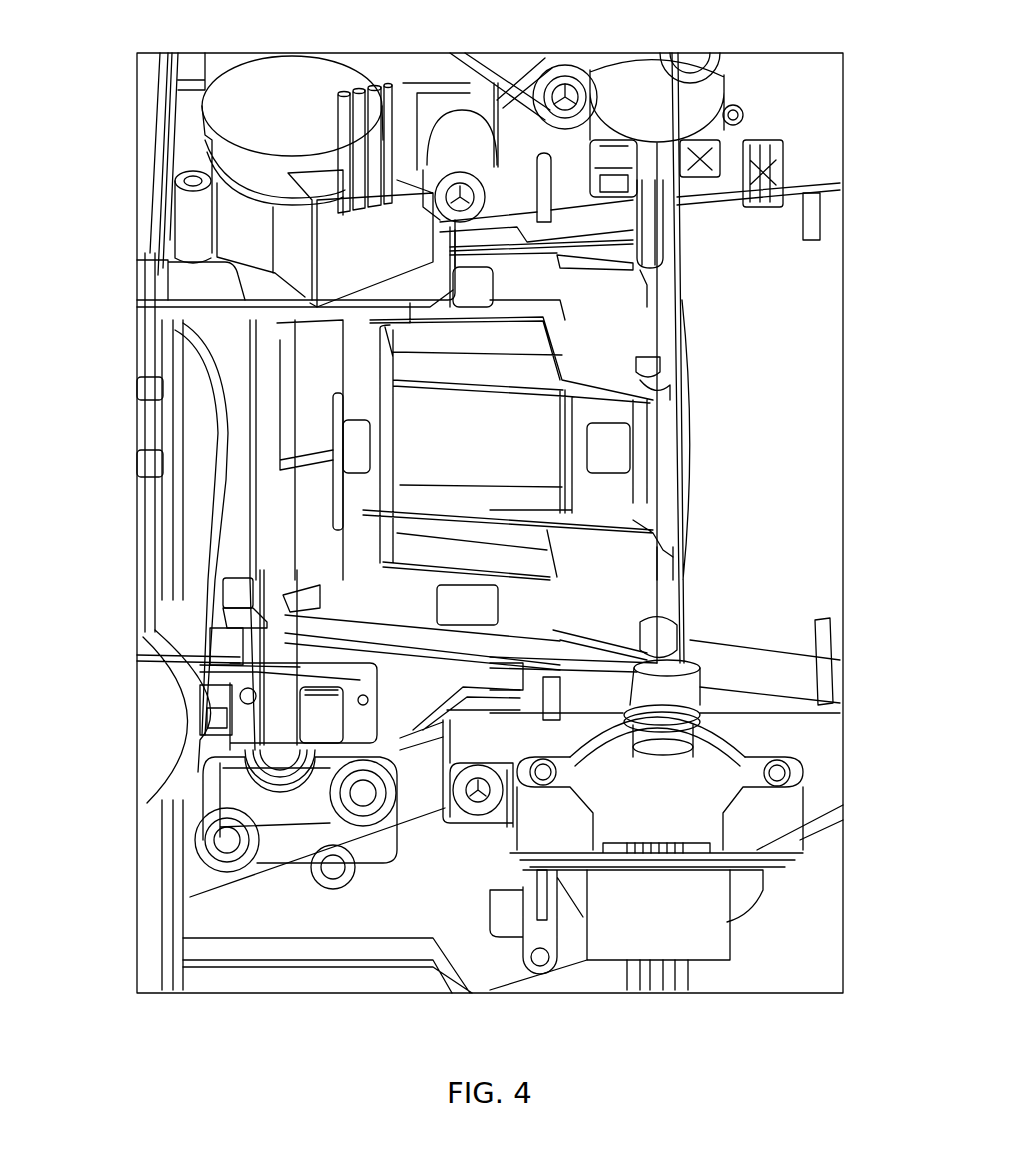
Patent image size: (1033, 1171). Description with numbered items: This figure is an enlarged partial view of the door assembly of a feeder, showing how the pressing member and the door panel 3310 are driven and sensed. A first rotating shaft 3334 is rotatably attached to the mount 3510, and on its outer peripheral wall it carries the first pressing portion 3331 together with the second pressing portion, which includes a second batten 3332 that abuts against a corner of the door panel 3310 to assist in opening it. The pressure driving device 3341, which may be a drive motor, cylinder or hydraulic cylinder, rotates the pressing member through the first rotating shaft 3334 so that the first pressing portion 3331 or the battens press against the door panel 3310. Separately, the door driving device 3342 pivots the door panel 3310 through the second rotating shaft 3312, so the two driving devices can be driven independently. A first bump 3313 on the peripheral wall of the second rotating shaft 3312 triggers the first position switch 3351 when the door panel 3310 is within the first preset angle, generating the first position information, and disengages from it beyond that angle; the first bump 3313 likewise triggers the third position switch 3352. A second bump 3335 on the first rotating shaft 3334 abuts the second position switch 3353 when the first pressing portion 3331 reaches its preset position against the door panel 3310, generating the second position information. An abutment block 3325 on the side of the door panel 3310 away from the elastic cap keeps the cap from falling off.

The pressure driving device 3341 is at (262, 108).
The first rotating shaft 3334 is at (275, 415).
The first pressing portion 3331 is at (325, 548).
The second batten 3332 is at (233, 588).
The second position switch 3353 is at (318, 698).
The second bump 3335 is at (322, 718).
The mount 3510 is at (425, 772).
The door panel 3310 is at (612, 333).
The second rotating shaft 3312 is at (663, 462).
The abutment block 3325 is at (497, 608).
The first bump 3313 is at (614, 130).
The first position switch 3351 is at (610, 140).
The third position switch 3352 is at (703, 133).
The door driving device 3342 is at (668, 803).